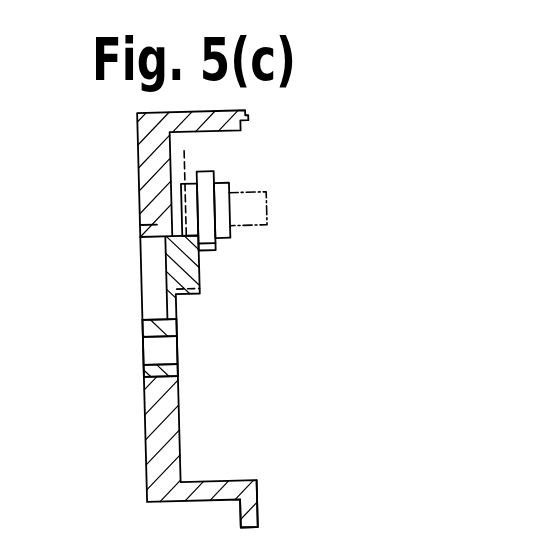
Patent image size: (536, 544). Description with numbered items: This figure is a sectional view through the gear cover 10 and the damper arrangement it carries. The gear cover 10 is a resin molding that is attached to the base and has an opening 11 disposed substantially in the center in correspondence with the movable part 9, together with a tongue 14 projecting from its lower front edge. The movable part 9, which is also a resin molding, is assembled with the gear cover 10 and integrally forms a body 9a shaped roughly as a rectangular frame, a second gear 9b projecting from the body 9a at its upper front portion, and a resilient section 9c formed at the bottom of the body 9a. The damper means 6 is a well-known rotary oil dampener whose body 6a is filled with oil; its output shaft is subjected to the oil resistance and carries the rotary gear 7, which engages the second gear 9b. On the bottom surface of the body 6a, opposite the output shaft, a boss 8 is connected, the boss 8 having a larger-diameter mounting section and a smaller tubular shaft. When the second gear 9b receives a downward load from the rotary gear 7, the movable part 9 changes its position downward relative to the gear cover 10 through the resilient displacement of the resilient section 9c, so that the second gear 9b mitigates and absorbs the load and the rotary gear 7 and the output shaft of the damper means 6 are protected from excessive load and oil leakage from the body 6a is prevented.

The damper means 6 is at (224, 167).
The body 6a is at (203, 252).
The rotary gear 7 is at (186, 211).
The boss 8 is at (248, 196).
The movable part 9 is at (294, 314).
The body 9a is at (177, 318).
The second gear 9b is at (188, 295).
The resilient section 9c is at (177, 353).
The gear cover 10 is at (127, 139).
The opening 11 is at (140, 225).
The tongue 14 is at (258, 517).